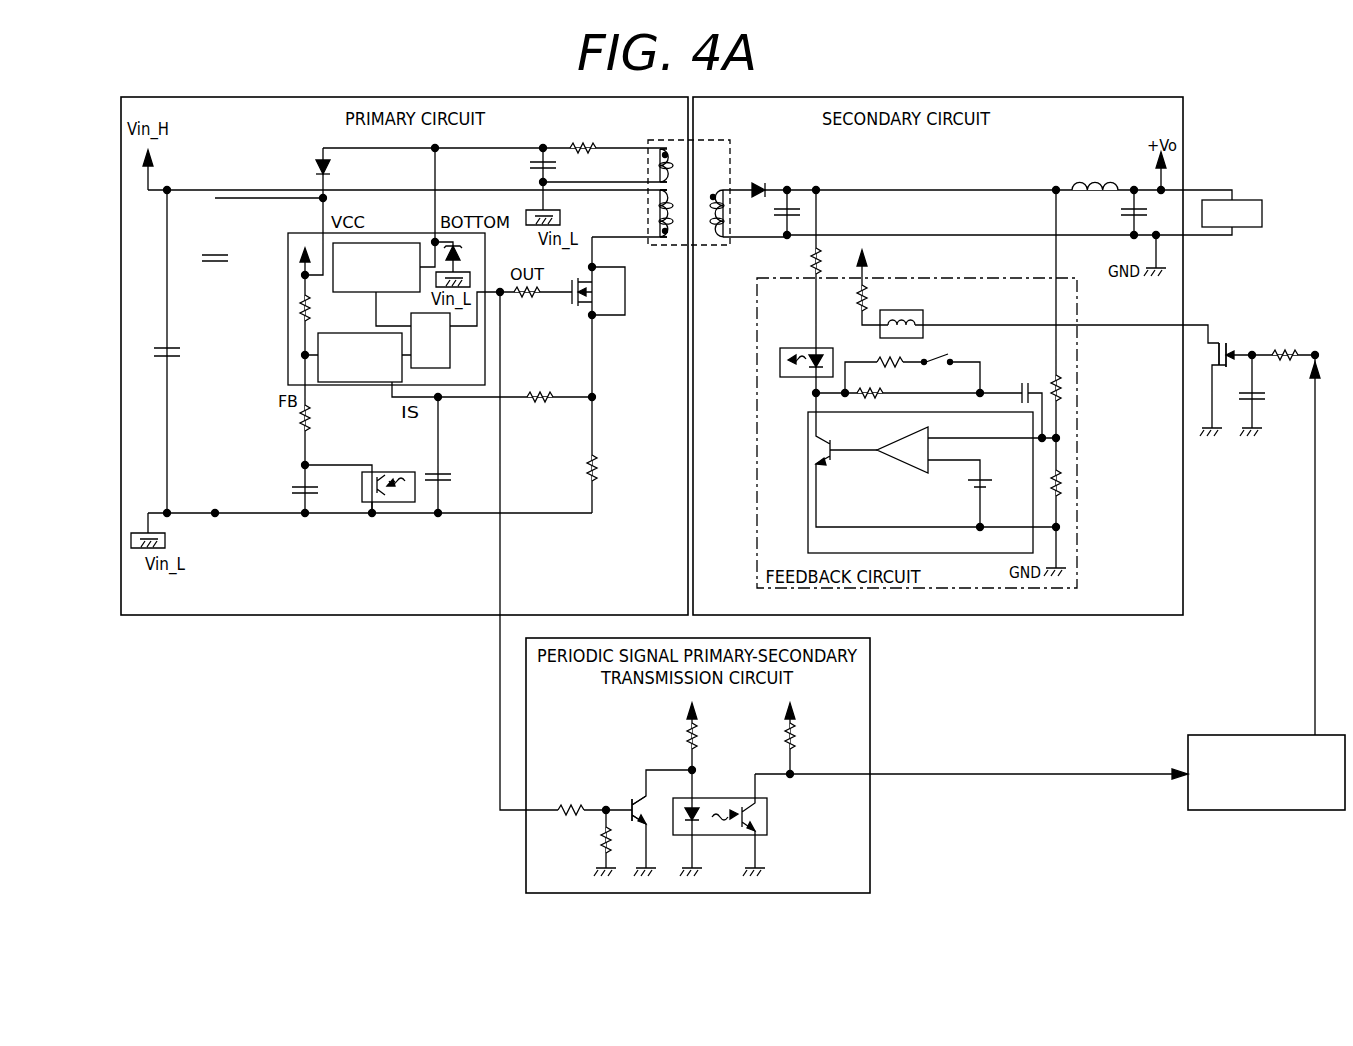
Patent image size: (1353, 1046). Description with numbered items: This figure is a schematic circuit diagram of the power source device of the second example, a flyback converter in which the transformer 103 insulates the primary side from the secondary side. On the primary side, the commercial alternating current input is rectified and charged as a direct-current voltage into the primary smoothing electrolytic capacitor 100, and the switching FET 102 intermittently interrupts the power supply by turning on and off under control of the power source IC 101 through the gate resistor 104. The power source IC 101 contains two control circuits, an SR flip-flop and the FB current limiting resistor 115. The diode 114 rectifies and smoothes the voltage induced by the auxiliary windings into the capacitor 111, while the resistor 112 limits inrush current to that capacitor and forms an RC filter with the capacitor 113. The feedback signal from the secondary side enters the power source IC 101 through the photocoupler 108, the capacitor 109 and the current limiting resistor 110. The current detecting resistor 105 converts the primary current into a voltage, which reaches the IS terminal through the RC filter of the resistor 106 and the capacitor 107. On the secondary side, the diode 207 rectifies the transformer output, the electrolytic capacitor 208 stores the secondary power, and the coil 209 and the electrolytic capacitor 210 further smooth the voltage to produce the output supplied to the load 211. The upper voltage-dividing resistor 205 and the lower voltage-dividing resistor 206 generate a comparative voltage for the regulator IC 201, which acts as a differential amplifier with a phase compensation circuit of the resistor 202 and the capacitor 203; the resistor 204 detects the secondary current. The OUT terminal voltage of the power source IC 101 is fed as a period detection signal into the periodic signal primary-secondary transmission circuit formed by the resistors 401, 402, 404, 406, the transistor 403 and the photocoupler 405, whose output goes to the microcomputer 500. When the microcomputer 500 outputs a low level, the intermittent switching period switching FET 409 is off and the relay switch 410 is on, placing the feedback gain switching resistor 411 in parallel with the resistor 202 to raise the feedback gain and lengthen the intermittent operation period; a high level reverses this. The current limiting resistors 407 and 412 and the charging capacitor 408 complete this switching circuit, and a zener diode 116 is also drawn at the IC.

The primary smoothing electrolytic capacitor 100 is at (167, 347).
The power source IC 101 is at (288, 233).
The switching FET 102 is at (578, 316).
The transformer 103 is at (730, 157).
The gate resistor 104 is at (529, 302).
The current detecting resistor 105 is at (600, 476).
The resistor 106 is at (542, 404).
The capacitor 107 is at (441, 470).
The photocoupler 108 is at (416, 497).
The capacitor 109 is at (293, 490).
The current limiting resistor 110 is at (300, 433).
The capacitor 111 is at (230, 258).
The resistor 112 is at (588, 142).
The capacitor 113 is at (528, 164).
The diode 114 is at (319, 169).
The FB current limiting resistor 115 is at (300, 315).
The zener diode 116 is at (468, 252).
The regulator IC 201 is at (808, 425).
The resistor 202 is at (860, 395).
The capacitor 203 is at (1026, 382).
The resistor 204 is at (810, 261).
The upper voltage-dividing resistor 205 is at (1068, 386).
The lower voltage-dividing resistor 206 is at (1066, 487).
The diode 207 is at (764, 176).
The electrolytic capacitor 208 is at (805, 213).
The coil 209 is at (1098, 180).
The electrolytic capacitor 210 is at (1122, 214).
The load 211 is at (1243, 197).
The resistor 401 is at (571, 802).
The resistor 402 is at (602, 841).
The transistor 403 is at (631, 795).
The resistor 404 is at (700, 732).
The photocoupler 405 is at (726, 798).
The resistor 406 is at (801, 732).
The current limiting resistor 407 is at (1286, 349).
The charging capacitor 408 is at (1246, 408).
The intermittent switching period switching FET 409 is at (1210, 342).
The relay switch 410 is at (906, 310).
The feedback gain switching resistor 411 is at (882, 358).
The current limiting resistor 412 is at (855, 304).
The microcomputer 500 is at (1239, 735).